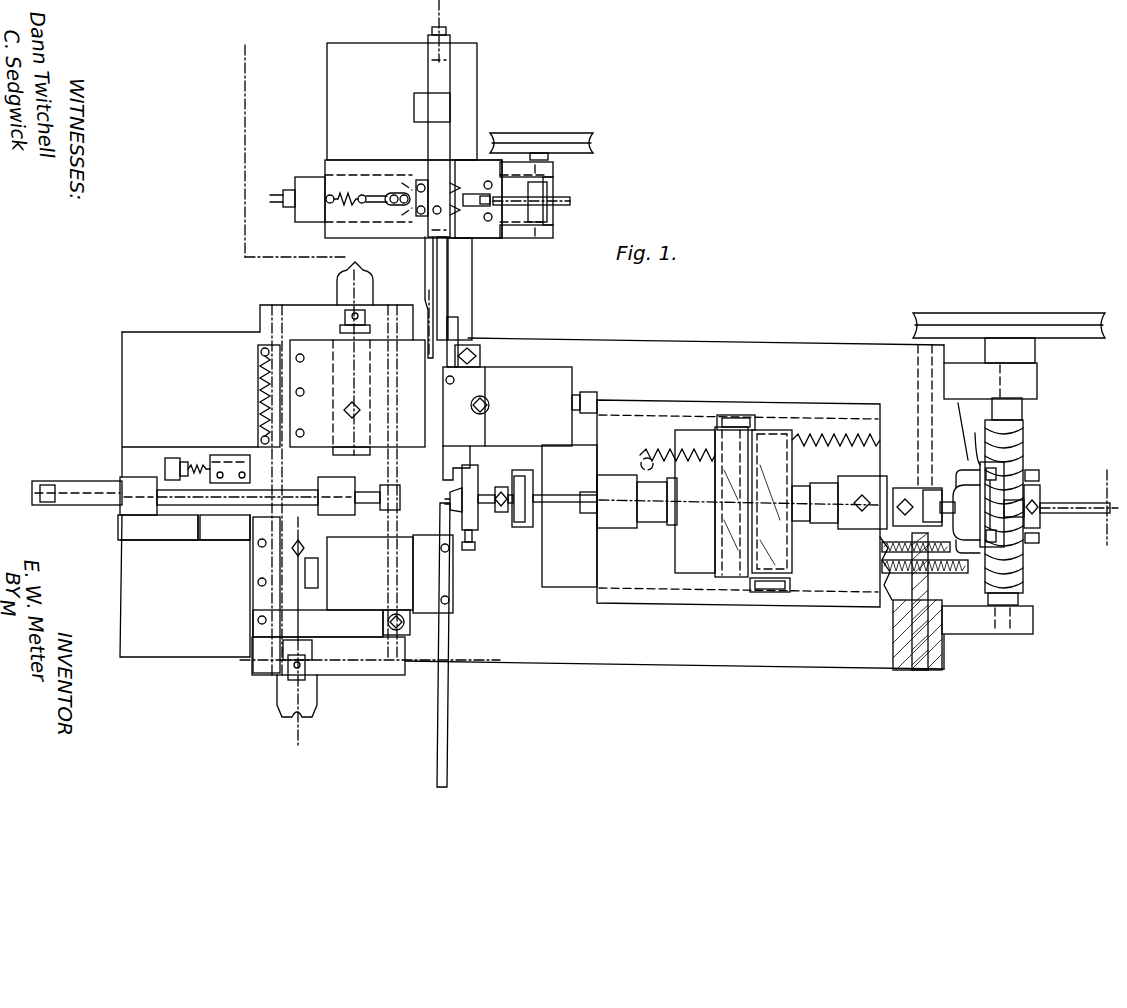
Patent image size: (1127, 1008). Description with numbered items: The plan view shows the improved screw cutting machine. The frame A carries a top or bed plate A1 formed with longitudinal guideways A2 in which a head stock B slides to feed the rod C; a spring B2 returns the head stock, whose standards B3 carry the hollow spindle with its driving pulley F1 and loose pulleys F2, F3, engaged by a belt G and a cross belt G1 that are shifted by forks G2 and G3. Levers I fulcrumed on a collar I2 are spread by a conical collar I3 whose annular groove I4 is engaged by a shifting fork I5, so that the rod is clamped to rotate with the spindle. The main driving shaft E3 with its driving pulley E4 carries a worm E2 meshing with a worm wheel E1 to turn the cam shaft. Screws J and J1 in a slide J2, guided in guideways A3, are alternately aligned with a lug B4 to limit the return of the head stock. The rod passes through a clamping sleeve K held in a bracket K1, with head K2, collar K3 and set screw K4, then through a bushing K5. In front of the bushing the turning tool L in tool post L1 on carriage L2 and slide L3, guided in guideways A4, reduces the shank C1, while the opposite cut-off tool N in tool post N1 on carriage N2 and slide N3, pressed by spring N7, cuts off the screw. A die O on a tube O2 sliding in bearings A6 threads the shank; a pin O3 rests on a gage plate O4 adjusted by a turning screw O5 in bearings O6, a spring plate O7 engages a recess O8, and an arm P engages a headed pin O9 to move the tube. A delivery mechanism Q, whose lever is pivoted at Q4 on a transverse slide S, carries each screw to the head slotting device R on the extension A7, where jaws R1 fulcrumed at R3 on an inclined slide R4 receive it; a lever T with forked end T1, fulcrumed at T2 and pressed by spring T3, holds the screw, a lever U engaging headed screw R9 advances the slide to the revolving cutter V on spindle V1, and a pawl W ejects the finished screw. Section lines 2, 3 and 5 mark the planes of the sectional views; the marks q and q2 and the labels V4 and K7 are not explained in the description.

The lever T is at (452, 140).
The spring T3 is at (446, 31).
The fulcrum of lever T T2 is at (412, 108).
The forked end of lever T T1 is at (428, 200).
The section line q is at (428, 31).
The pawl W is at (484, 145).
The pulley rim V4 is at (590, 146).
The revolving cutter V is at (540, 200).
The spindle V1 is at (548, 226).
The head slotting device R is at (436, 250).
The jaw R1 is at (350, 190).
The fulcrum of the jaws R3 is at (432, 240).
The slide R4 is at (316, 185).
The headed screw R9 is at (272, 202).
The lever U is at (284, 196).
The section line 5— 5 is at (270, 199).
The section line 3— 3 is at (291, 399).
The frame A is at (532, 490).
The top plate A1 is at (586, 666).
The guideways A2 is at (560, 588).
The guideways A3 is at (930, 658).
The guideways A4 is at (355, 678).
The bearings A6 is at (150, 472).
The extension of the main frame A7 is at (325, 272).
The cut-off tool N is at (443, 452).
The tool post N1 is at (470, 390).
The carriage N2 is at (357, 397).
The slide N3 is at (366, 290).
The spring N7 is at (258, 390).
The section line q q2 is at (424, 385).
The delivery mechanism Q is at (453, 297).
The slide S is at (448, 308).
The pivot Q4 is at (458, 330).
The arm P is at (62, 485).
The die O is at (385, 494).
The tube O2 is at (100, 504).
The pin O3 is at (230, 505).
The gage plate O4 is at (230, 466).
The turning screw O5 is at (196, 466).
The bearings O6 is at (172, 468).
The spring plate O7 is at (204, 538).
The recess O8 is at (186, 506).
The headed pin O9 is at (46, 503).
The turning tool L is at (450, 632).
The tool post L1 is at (353, 595).
The tool carriage L2 is at (331, 623).
The slide L3 is at (370, 660).
The clamping sleeve K is at (455, 492).
The bracket K1 is at (523, 528).
The head of the sleeve K2 is at (555, 492).
The collar K3 is at (488, 492).
The set screw K4 is at (508, 514).
The bushing K5 is at (496, 486).
The pin K7 is at (470, 550).
The rod C is at (563, 528).
The shank C1 is at (768, 593).
The head stock B is at (702, 410).
The spring B2 is at (838, 432).
The standards B3 is at (616, 490).
The lug B4 is at (882, 566).
The driving pulley F1 is at (738, 578).
The loose pulley F2 is at (680, 554).
The loose pulley F3 is at (785, 556).
The belt G is at (718, 580).
The cross belt G1 is at (778, 430).
The shifting fork G2 is at (740, 414).
The shifting fork G3 is at (786, 592).
The lever I is at (958, 482).
The collar I2 is at (906, 488).
The conical spreading collar I3 is at (967, 416).
The annular groove I4 is at (988, 500).
The shifting fork I5 is at (979, 438).
The screw J is at (950, 575).
The screw J1 is at (880, 543).
The slide J2 is at (893, 612).
The worm wheel E1 is at (1025, 575).
The worm E2 is at (1042, 540).
The main driving shaft E3 is at (1020, 406).
The driving pulley E4 is at (1030, 322).
The section line 2— 2 is at (1083, 507).